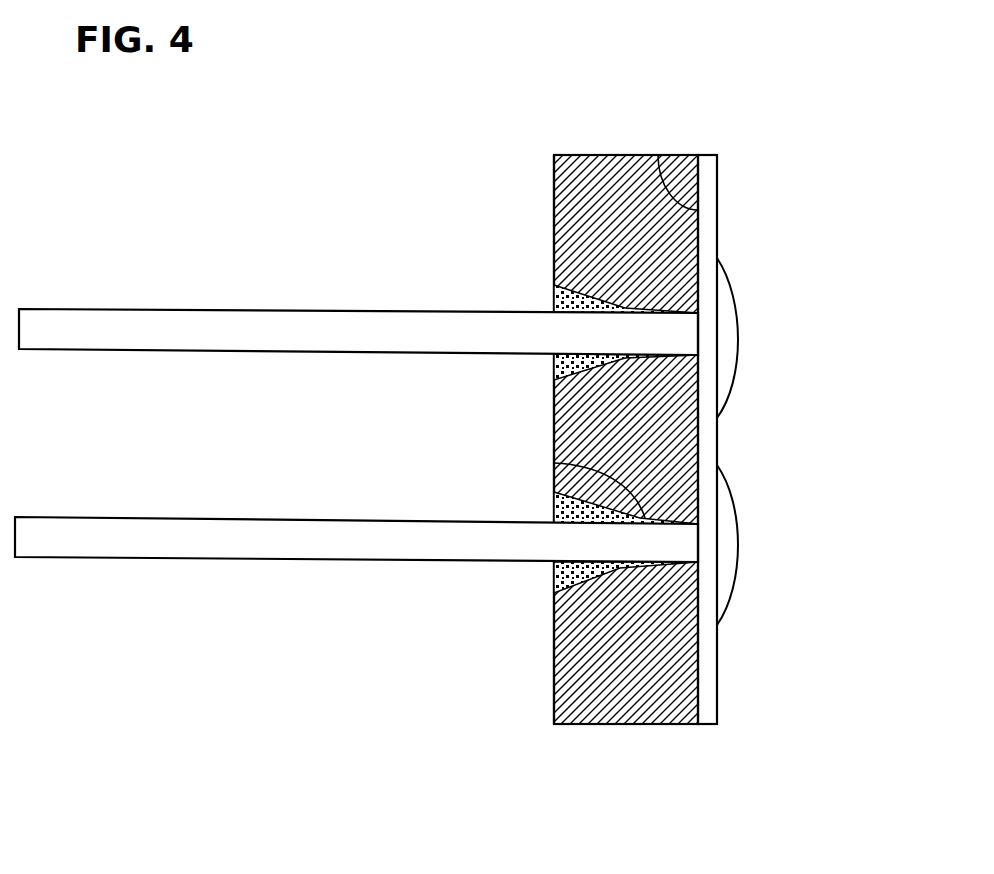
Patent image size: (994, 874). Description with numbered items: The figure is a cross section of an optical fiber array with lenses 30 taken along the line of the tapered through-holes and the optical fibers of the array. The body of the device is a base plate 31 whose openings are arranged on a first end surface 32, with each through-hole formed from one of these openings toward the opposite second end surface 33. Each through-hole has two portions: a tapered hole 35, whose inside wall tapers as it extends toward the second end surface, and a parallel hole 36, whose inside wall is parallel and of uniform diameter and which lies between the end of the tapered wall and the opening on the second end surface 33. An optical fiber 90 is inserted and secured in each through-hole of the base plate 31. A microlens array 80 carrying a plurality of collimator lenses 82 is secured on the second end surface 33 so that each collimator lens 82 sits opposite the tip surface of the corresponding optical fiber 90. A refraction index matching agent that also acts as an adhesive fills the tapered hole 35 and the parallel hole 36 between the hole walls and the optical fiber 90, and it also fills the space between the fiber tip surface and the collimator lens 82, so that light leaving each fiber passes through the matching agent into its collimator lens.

The optical fiber array with lenses 30 is at (243, 162).
The base plate 31 is at (598, 724).
The first end surface 32 is at (554, 212).
The second end surface 33 is at (663, 155).
The tapered hole 35 is at (554, 574).
The parallel hole 36 is at (554, 462).
The microlens array 80 is at (712, 192).
The collimator lens 82 is at (727, 303).
The optical fiber 90 is at (107, 538).